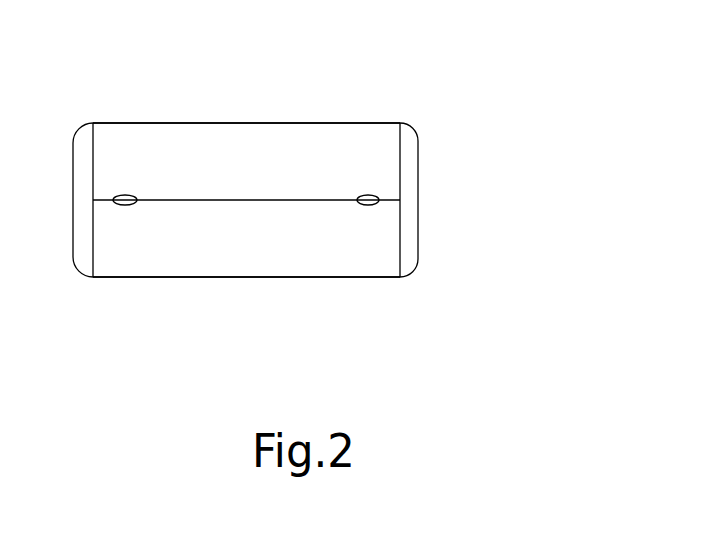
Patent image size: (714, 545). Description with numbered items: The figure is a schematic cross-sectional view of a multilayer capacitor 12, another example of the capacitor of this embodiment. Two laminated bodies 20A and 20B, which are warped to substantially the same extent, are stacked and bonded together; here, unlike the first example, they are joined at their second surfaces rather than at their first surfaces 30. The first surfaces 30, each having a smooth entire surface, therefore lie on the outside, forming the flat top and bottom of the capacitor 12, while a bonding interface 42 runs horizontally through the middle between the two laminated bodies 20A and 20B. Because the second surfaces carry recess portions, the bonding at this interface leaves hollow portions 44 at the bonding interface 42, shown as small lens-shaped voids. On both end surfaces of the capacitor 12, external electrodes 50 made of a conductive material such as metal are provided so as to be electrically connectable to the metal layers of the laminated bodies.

The multilayer capacitor 12 is at (448, 96).
The laminated body 20A is at (390, 145).
The laminated body 20B is at (390, 238).
The first surface 30 is at (265, 122).
The bonding interface 42 is at (330, 197).
The hollow portion 44 is at (124, 205).
The external electrode 50 is at (85, 260).